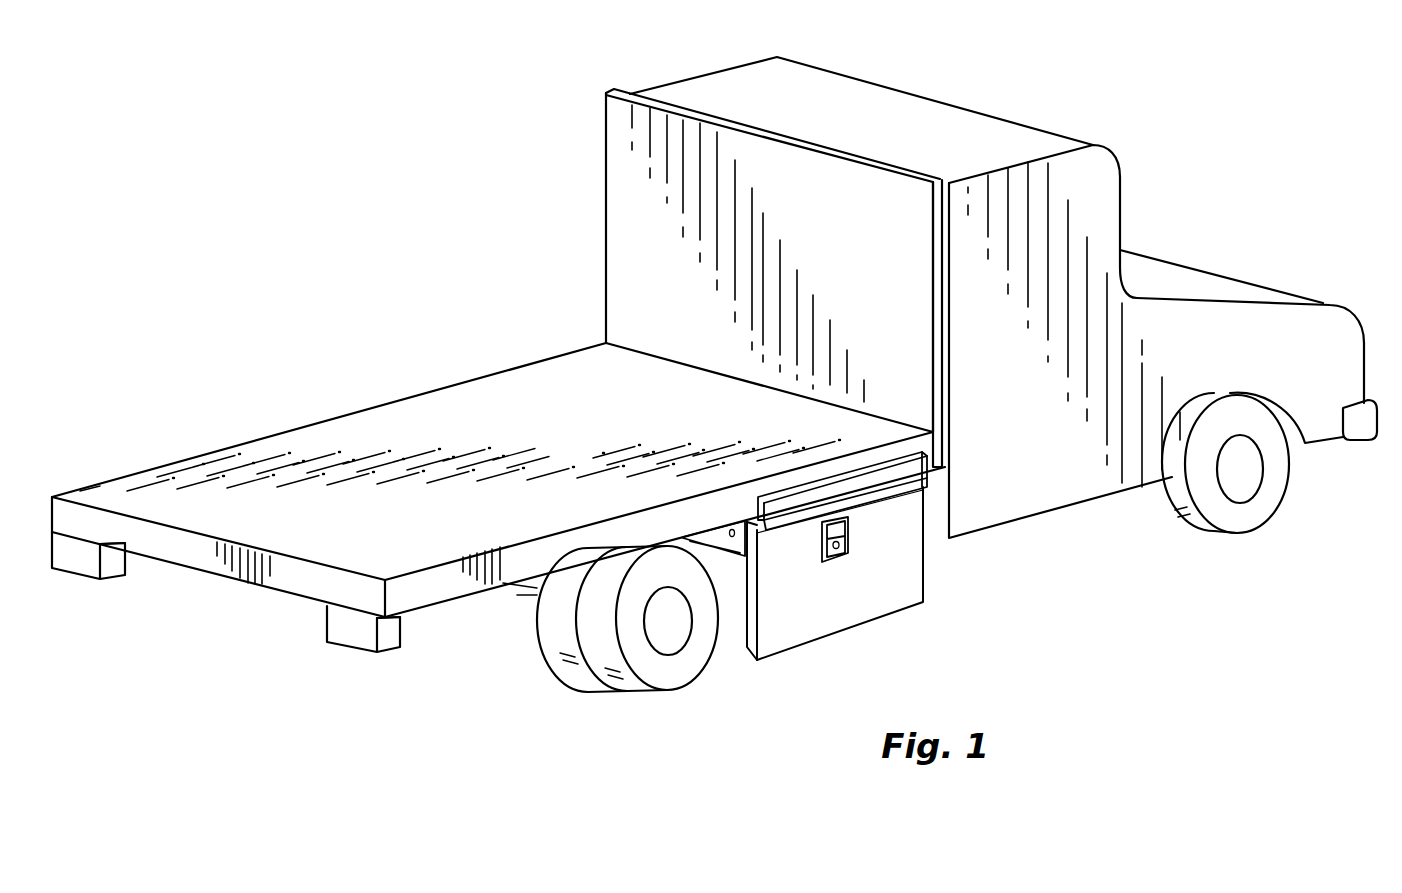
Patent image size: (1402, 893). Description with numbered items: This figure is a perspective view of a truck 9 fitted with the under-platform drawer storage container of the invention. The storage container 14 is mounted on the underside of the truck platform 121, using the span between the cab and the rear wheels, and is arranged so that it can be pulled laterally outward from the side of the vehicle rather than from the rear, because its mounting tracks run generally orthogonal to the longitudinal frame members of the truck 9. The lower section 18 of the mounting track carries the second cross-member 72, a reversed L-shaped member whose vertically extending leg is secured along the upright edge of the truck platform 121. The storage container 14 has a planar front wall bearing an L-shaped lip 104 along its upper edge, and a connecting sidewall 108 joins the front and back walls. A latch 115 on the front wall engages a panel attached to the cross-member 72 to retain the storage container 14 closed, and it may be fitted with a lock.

The truck 9 is at (1122, 180).
The storage container 14 is at (868, 588).
The lower section 18 is at (722, 535).
The second cross-member 72 is at (825, 488).
The L-shaped lip 104 is at (790, 525).
The connecting sidewall 108 is at (737, 637).
The latch 115 is at (852, 535).
The truck platform 121 is at (585, 466).